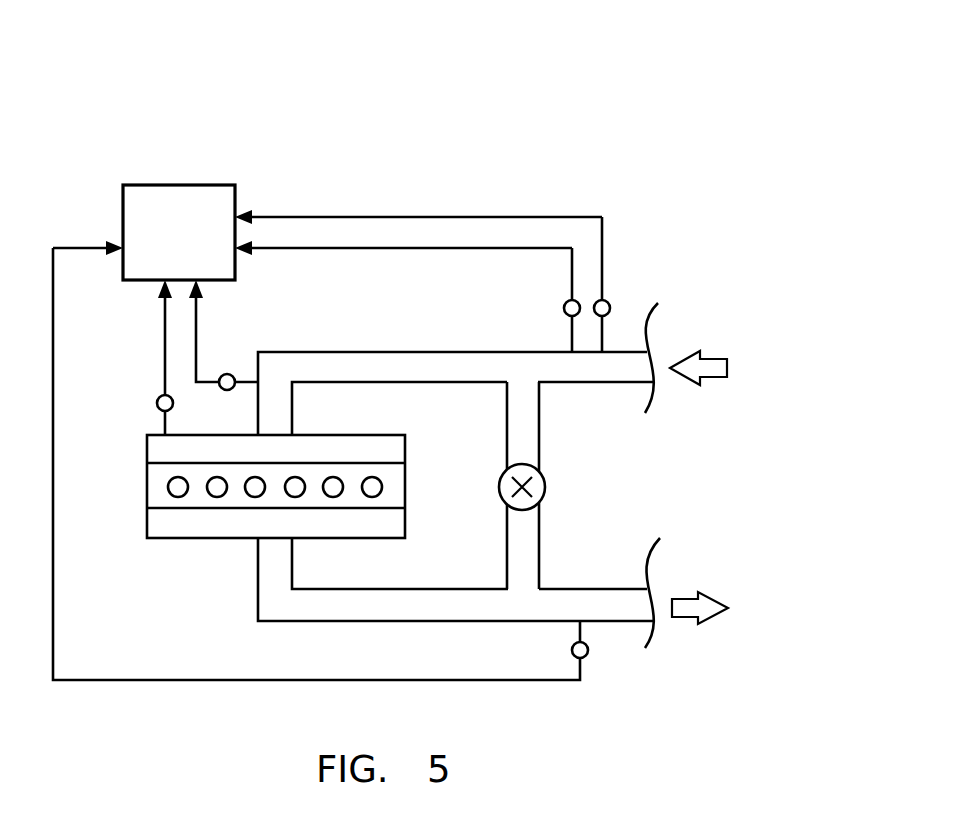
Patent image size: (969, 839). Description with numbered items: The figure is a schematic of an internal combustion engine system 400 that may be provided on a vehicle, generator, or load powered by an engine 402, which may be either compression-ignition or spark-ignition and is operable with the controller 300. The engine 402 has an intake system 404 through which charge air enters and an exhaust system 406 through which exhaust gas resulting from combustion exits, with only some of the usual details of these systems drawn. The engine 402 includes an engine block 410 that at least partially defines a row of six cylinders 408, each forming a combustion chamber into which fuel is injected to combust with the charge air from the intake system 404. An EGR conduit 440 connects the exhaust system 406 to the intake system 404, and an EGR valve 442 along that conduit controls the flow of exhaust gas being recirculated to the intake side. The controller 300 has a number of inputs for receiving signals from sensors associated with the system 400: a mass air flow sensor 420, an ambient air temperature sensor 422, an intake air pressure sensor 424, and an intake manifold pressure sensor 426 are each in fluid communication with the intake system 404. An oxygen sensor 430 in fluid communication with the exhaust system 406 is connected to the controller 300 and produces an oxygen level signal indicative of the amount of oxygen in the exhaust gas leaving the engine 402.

The controller 300 is at (198, 251).
The system 400 is at (566, 143).
The engine 402 is at (264, 489).
The intake system 404 is at (361, 352).
The exhaust system 406 is at (288, 623).
The cylinders 408 is at (383, 486).
The engine block 410 is at (147, 500).
The mass air flow sensor 420 is at (611, 305).
The ambient air temperature sensor 422 is at (565, 303).
The intake air pressure sensor 424 is at (229, 374).
The intake manifold pressure sensor 426 is at (157, 403).
The oxygen sensor 430 is at (586, 656).
The EGR conduit 440 is at (507, 425).
The EGR valve 442 is at (546, 487).